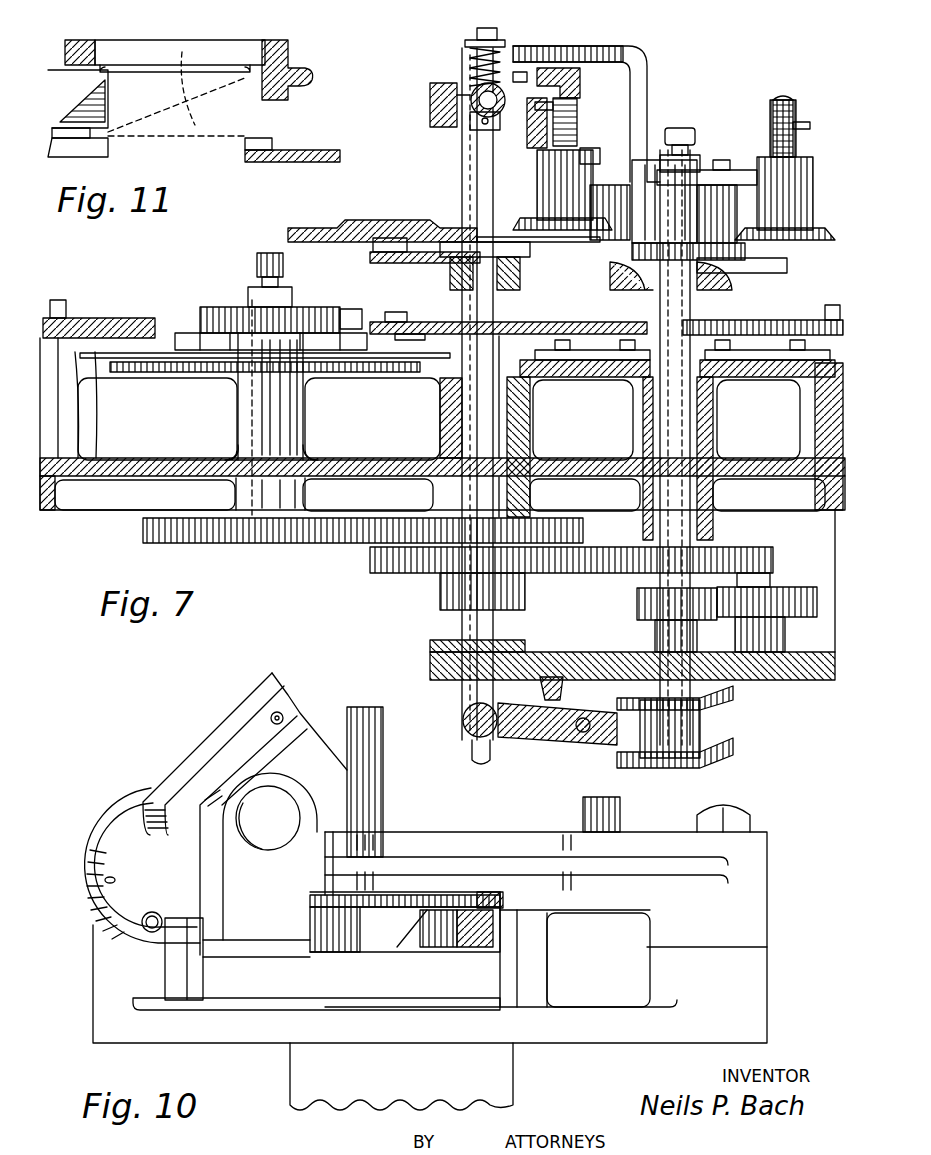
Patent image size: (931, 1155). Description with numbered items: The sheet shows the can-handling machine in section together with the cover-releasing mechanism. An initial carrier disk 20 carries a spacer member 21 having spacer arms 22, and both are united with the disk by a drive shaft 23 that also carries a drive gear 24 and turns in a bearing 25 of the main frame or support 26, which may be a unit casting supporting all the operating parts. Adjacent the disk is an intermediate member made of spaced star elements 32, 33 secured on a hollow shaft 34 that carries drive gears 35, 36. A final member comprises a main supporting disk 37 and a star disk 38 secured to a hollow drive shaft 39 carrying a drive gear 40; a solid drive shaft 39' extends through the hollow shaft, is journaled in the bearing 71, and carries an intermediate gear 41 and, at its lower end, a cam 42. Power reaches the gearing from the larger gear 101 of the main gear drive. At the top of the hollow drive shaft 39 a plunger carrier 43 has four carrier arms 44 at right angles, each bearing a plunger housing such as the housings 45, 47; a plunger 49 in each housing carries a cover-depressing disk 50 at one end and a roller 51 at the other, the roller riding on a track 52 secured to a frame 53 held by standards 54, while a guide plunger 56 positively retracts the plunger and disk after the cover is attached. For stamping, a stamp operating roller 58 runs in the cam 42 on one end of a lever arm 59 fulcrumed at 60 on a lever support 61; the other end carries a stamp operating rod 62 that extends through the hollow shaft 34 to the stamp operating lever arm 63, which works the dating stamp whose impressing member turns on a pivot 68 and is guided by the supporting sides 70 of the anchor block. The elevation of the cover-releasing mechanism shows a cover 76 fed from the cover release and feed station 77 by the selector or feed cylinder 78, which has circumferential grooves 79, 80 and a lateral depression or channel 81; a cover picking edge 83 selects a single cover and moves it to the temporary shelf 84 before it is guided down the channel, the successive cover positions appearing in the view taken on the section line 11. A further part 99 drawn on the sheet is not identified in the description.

In FIG. 7, the initial carrier disk 20 is at (163, 350).
In FIG. 7, the spacer member 21 is at (236, 306).
In FIG. 7, the spacer arms 22 is at (192, 332).
In FIG. 7, the drive shaft 23 is at (245, 423).
In FIG. 7, the drive gear 24 is at (143, 540).
In FIG. 7, the bearing 25 is at (306, 456).
In FIG. 7, the main frame or support 26 is at (90, 510).
In FIG. 11, the star element 32 is at (312, 163).
In FIG. 7, the star element 32 is at (410, 265).
In FIG. 7, the star element 33 is at (438, 322).
In FIG. 7, the hollow shaft 34 is at (510, 432).
In FIG. 7, the drive gear 35 is at (395, 575).
In FIG. 7, the drive gear 36 is at (583, 533).
In FIG. 7, the main supporting disk 37 is at (608, 376).
In FIG. 7, the star disk 38 is at (593, 285).
In FIG. 7, the hollow drive shaft 39 is at (748, 458).
In FIG. 7, the solid drive shaft 39' is at (620, 458).
In FIG. 7, the drive gear 40 is at (770, 547).
In FIG. 7, the intermediate gear 41 is at (635, 608).
In FIG. 7, the cam 42 is at (712, 712).
In FIG. 7, the housing or plunger carrier 43 is at (690, 172).
In FIG. 7, the carrier arms 44 is at (598, 175).
In FIG. 7, the plunger housing 45 is at (578, 130).
In FIG. 7, the plunger housing 47 is at (812, 180).
In FIG. 7, the plunger 49 is at (600, 128).
In FIG. 7, the cover-depressing disk 50 is at (625, 230).
In FIG. 7, the roller 51 is at (580, 105).
In FIG. 7, the track 52 is at (592, 82).
In FIG. 7, the frame 53 is at (545, 72).
In FIG. 7, the standards 54 is at (478, 150).
In FIG. 7, the guide plunger 56 is at (812, 126).
In FIG. 7, the stamp operating roller 58 is at (680, 758).
In FIG. 7, the lever arm 59 is at (605, 748).
In FIG. 7, the fulcrum 60 is at (583, 735).
In FIG. 7, the lever support 61 is at (553, 690).
In FIG. 7, the stamp operating rod 62 is at (478, 198).
In FIG. 7, the stamp operating lever arm 63 is at (436, 92).
In FIG. 10, the pivot 68 is at (158, 910).
In FIG. 10, the supporting sides 70 is at (215, 750).
In FIG. 7, the bearing 71 is at (697, 632).
In FIG. 11, the cover 76 is at (180, 42).
In FIG. 11, the cover release and feed station 77 is at (282, 40).
In FIG. 11, the selector or feed cylinder 78 is at (110, 98).
In FIG. 10, the selector or feed cylinder 78 is at (308, 930).
In FIG. 10, the groove 79 is at (308, 902).
In FIG. 11, the groove 80 is at (70, 135).
In FIG. 10, the groove 80 is at (310, 955).
In FIG. 11, the lateral depression or channel 81 is at (58, 72).
In FIG. 10, the lateral depression or channel 81 is at (415, 947).
In FIG. 10, the cover picking edge 83 is at (503, 900).
In FIG. 11, the temporary shelf 84 is at (248, 90).
In FIG. 11, the block 99 is at (245, 148).
In FIG. 7, the block 99 is at (373, 249).
In FIG. 7, the larger gear 101 is at (790, 590).
In FIG. 7, the section line 11 is at (500, 826).
In FIG. 10, the section line 11 is at (353, 984).